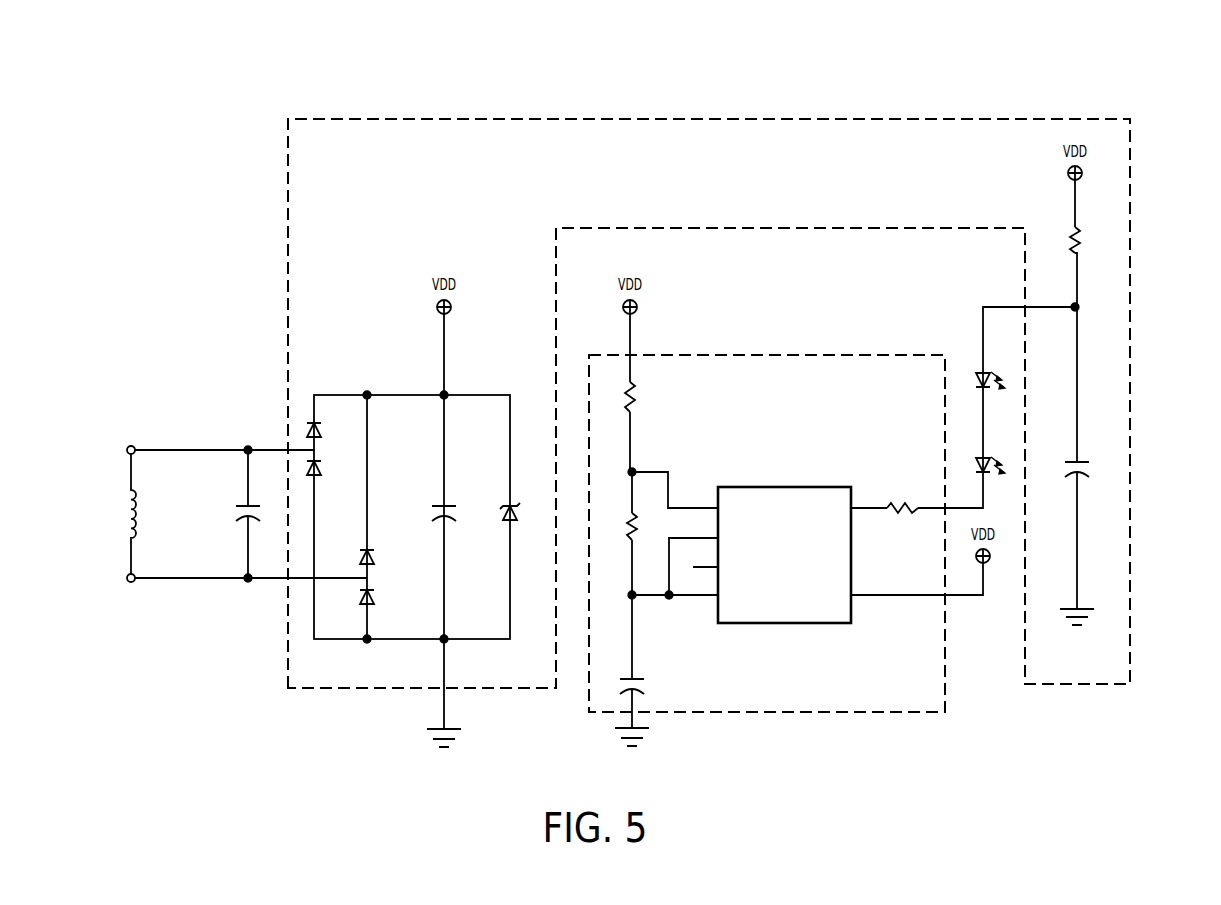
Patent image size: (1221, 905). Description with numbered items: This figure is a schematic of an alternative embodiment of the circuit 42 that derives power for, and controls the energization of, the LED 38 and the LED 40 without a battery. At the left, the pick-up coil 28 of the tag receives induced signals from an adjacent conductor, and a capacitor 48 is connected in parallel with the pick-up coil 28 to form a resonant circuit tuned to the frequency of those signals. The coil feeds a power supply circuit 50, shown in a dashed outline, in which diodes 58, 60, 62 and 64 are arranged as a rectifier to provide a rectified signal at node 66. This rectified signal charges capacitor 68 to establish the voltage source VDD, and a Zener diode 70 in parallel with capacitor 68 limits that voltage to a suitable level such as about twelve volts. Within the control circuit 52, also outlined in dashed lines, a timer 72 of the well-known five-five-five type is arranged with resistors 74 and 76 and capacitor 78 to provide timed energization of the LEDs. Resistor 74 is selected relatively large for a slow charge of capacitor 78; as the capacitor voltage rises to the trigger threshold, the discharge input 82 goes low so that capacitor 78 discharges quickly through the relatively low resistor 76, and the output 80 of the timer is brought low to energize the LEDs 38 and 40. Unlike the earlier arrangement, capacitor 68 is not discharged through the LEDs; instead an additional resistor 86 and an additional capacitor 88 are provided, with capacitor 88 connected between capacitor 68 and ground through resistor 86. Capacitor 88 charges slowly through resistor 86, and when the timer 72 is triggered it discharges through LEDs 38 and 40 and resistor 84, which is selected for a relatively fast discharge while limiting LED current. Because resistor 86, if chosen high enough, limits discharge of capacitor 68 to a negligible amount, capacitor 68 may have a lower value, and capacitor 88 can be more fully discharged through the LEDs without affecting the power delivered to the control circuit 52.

The pick-up coil 28 is at (128, 510).
The LED 38 is at (975, 378).
The LED 40 is at (991, 458).
The circuit 42 is at (350, 92).
The capacitor 48 is at (245, 505).
The power supply circuit 50 is at (485, 117).
The control circuit 52 is at (800, 353).
The diode 58 is at (313, 430).
The diode 60 is at (321, 469).
The diode 62 is at (378, 556).
The diode 64 is at (375, 598).
The node 66 is at (368, 393).
The capacitor 68 is at (454, 520).
The Zener diode 70 is at (509, 507).
The 555 timer 72 is at (772, 487).
The resistor 74 is at (631, 403).
The resistor 76 is at (632, 540).
The capacitor 78 is at (640, 685).
The output 80 is at (852, 494).
The discharge input 82 is at (717, 500).
The resistor 84 is at (900, 502).
The resistor 86 is at (1075, 231).
The capacitor 88 is at (1087, 463).